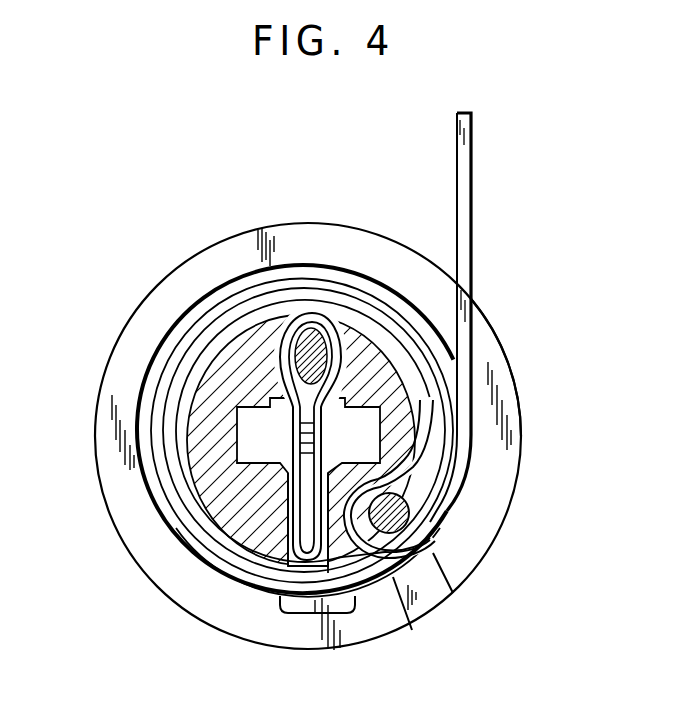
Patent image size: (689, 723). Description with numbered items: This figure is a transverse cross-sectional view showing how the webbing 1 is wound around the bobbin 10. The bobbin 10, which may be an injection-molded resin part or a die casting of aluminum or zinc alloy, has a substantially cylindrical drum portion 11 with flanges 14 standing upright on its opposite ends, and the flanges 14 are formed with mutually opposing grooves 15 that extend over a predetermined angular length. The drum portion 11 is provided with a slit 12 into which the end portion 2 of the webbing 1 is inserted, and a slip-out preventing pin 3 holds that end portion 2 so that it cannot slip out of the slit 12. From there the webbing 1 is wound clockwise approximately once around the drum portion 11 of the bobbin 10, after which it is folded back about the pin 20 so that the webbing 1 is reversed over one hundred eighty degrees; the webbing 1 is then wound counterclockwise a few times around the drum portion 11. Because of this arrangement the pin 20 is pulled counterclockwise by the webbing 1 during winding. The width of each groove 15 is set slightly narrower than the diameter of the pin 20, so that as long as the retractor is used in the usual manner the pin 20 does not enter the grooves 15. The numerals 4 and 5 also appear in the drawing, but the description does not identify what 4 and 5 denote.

The webbing 1 is at (474, 203).
The end portion 2 is at (332, 322).
The slip-out preventing pin 3 is at (283, 347).
The band turn 4 is at (224, 540).
The hook end of band 5 is at (453, 503).
The bobbin 10 is at (143, 292).
The drum portion 11 is at (214, 406).
The slit 12 is at (310, 558).
The flanges 14 is at (515, 371).
The grooves 15 is at (308, 271).
The pin 20 is at (405, 530).